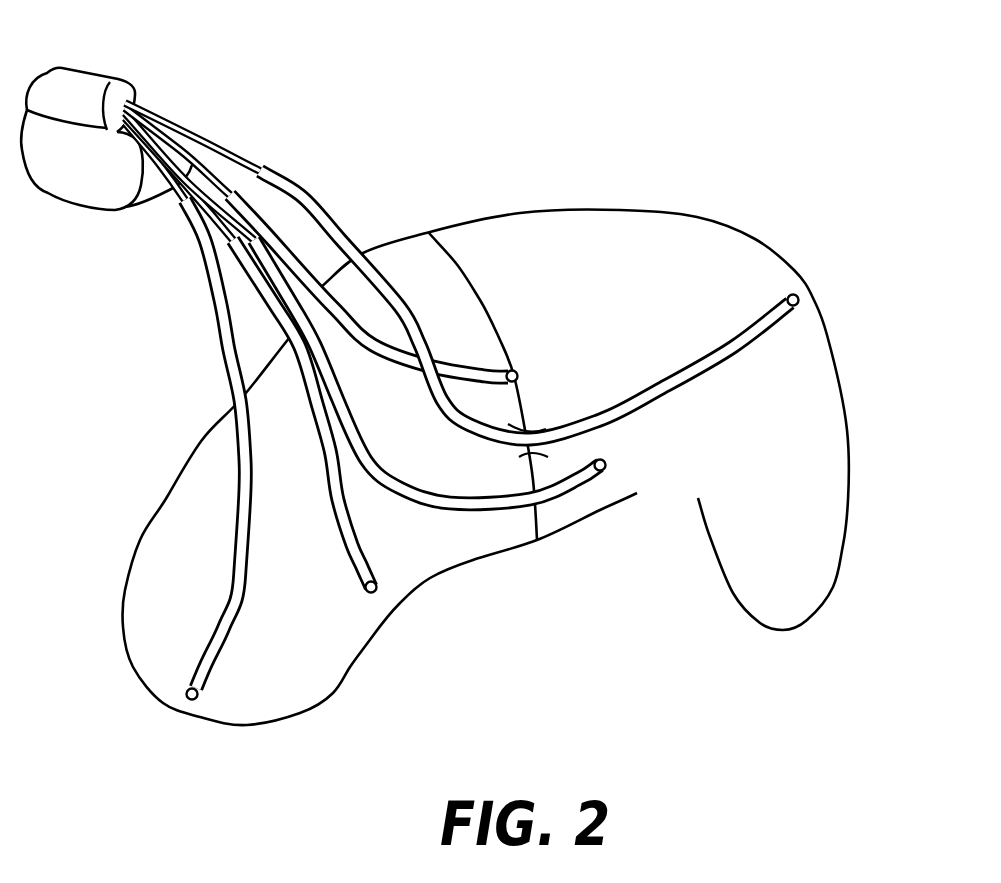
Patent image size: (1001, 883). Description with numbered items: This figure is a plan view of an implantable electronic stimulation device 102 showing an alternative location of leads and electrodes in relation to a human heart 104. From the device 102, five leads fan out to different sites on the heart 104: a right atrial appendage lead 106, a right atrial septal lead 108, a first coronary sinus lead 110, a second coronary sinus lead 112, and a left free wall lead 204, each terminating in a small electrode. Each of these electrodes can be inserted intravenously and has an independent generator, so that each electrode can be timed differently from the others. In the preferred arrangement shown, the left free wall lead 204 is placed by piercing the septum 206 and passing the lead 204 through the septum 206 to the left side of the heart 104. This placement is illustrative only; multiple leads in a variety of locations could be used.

The implantable electronic stimulation device 102 is at (82, 85).
The human heart 104 is at (640, 318).
The right atrial appendage lead 106 is at (200, 700).
The right atrial septal lead 108 is at (521, 376).
The first coronary sinus lead 110 is at (377, 581).
The second coronary sinus lead 112 is at (606, 462).
The left free wall lead 204 is at (798, 297).
The septum 206 is at (528, 453).